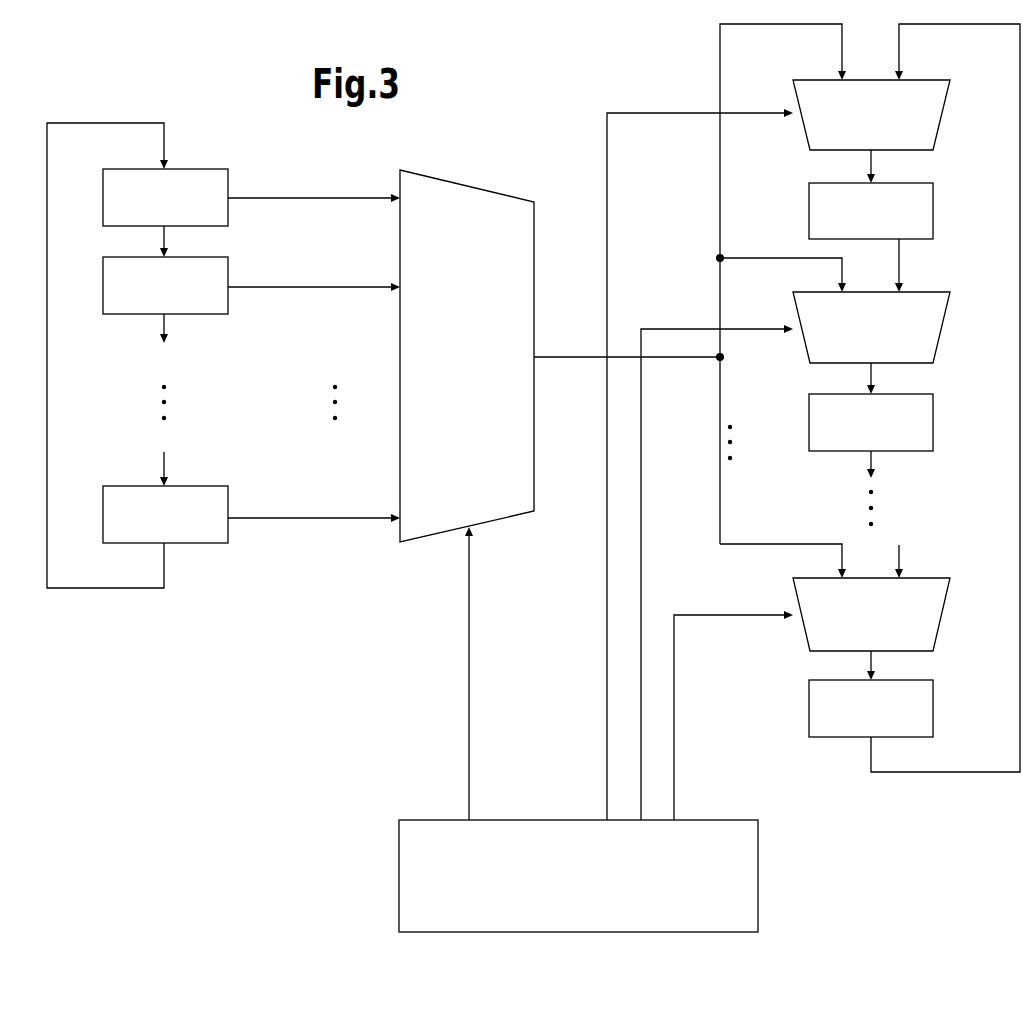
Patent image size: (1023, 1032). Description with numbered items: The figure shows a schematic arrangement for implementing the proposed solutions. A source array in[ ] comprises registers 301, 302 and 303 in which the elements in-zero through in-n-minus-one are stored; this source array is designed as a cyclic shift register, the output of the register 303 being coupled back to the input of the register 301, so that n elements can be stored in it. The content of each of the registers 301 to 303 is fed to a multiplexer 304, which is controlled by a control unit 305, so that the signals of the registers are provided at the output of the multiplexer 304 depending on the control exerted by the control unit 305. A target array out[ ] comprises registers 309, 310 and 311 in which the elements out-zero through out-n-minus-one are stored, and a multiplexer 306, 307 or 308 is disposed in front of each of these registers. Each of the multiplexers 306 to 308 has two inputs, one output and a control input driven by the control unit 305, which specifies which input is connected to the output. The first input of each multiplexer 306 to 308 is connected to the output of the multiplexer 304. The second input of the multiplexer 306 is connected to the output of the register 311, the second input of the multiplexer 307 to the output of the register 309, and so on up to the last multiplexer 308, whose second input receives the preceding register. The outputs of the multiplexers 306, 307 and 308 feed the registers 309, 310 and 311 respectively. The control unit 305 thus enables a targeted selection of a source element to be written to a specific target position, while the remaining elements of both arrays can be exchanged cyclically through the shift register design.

The register 301 is at (234, 197).
The register 302 is at (234, 285).
The register 303 is at (234, 514).
The multiplexer 304 is at (560, 350).
The control unit 305 is at (576, 520).
The multiplexer 306 is at (890, 131).
The multiplexer 307 is at (890, 343).
The multiplexer 308 is at (890, 629).
The register 309 is at (895, 211).
The register 310 is at (895, 422).
The register 311 is at (895, 708).